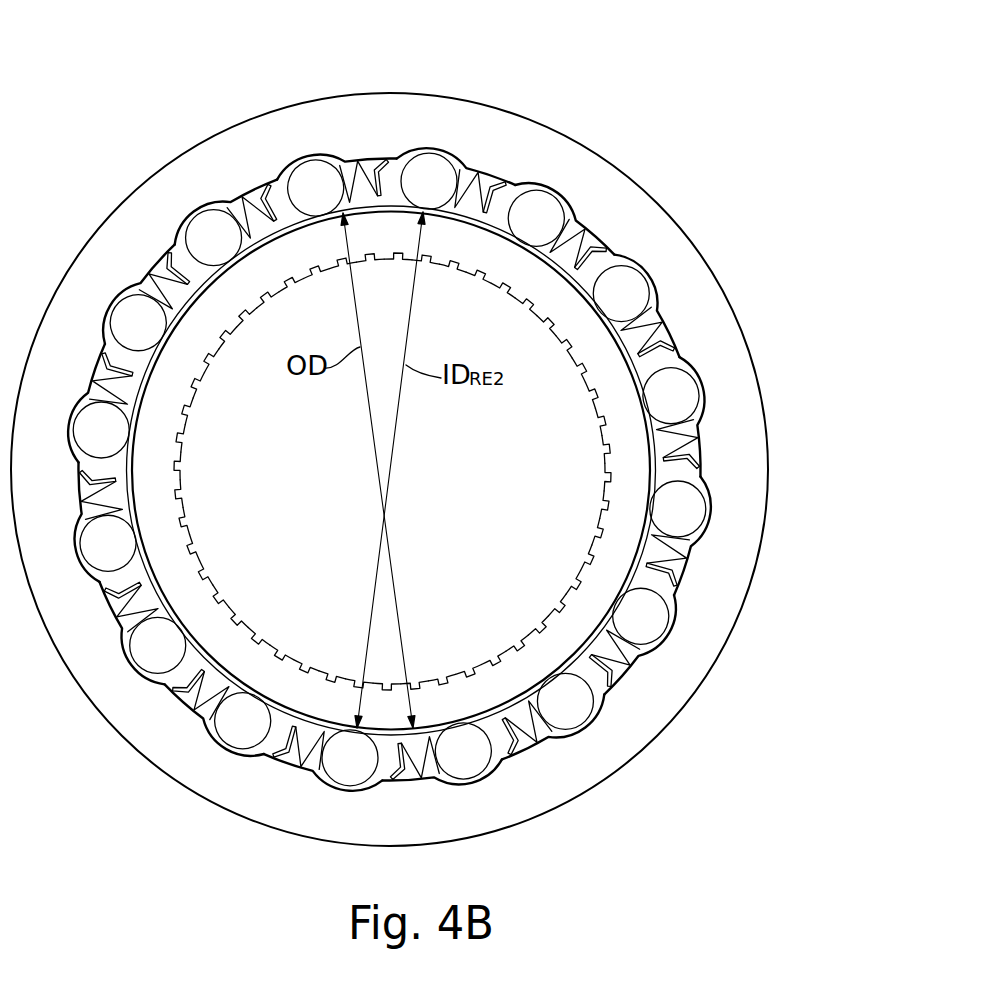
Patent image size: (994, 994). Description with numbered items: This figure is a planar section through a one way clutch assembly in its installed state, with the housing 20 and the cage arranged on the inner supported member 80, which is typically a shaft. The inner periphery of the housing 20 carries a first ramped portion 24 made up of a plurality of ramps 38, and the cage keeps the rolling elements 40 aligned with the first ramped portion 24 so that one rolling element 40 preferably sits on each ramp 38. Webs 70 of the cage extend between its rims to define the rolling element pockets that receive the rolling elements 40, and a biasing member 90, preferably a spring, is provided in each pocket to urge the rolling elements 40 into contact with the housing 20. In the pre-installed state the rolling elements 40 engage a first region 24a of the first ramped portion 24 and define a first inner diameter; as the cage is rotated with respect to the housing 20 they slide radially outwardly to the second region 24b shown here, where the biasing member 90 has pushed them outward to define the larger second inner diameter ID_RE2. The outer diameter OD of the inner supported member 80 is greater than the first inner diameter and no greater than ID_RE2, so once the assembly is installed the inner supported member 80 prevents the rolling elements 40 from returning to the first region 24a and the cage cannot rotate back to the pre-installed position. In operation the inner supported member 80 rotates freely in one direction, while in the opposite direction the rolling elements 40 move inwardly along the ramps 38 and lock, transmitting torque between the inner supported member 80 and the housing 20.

The housing 20 is at (525, 152).
The first ramped portion 24 is at (382, 157).
The first region of the first ramped portion 24a is at (400, 153).
The second region of the first ramped portion 24b is at (652, 273).
The ramps 38 is at (307, 160).
The rolling elements 40 is at (313, 180).
The webs 70 is at (340, 158).
The inner supported member 80 is at (633, 452).
The biasing member 90 is at (493, 153).